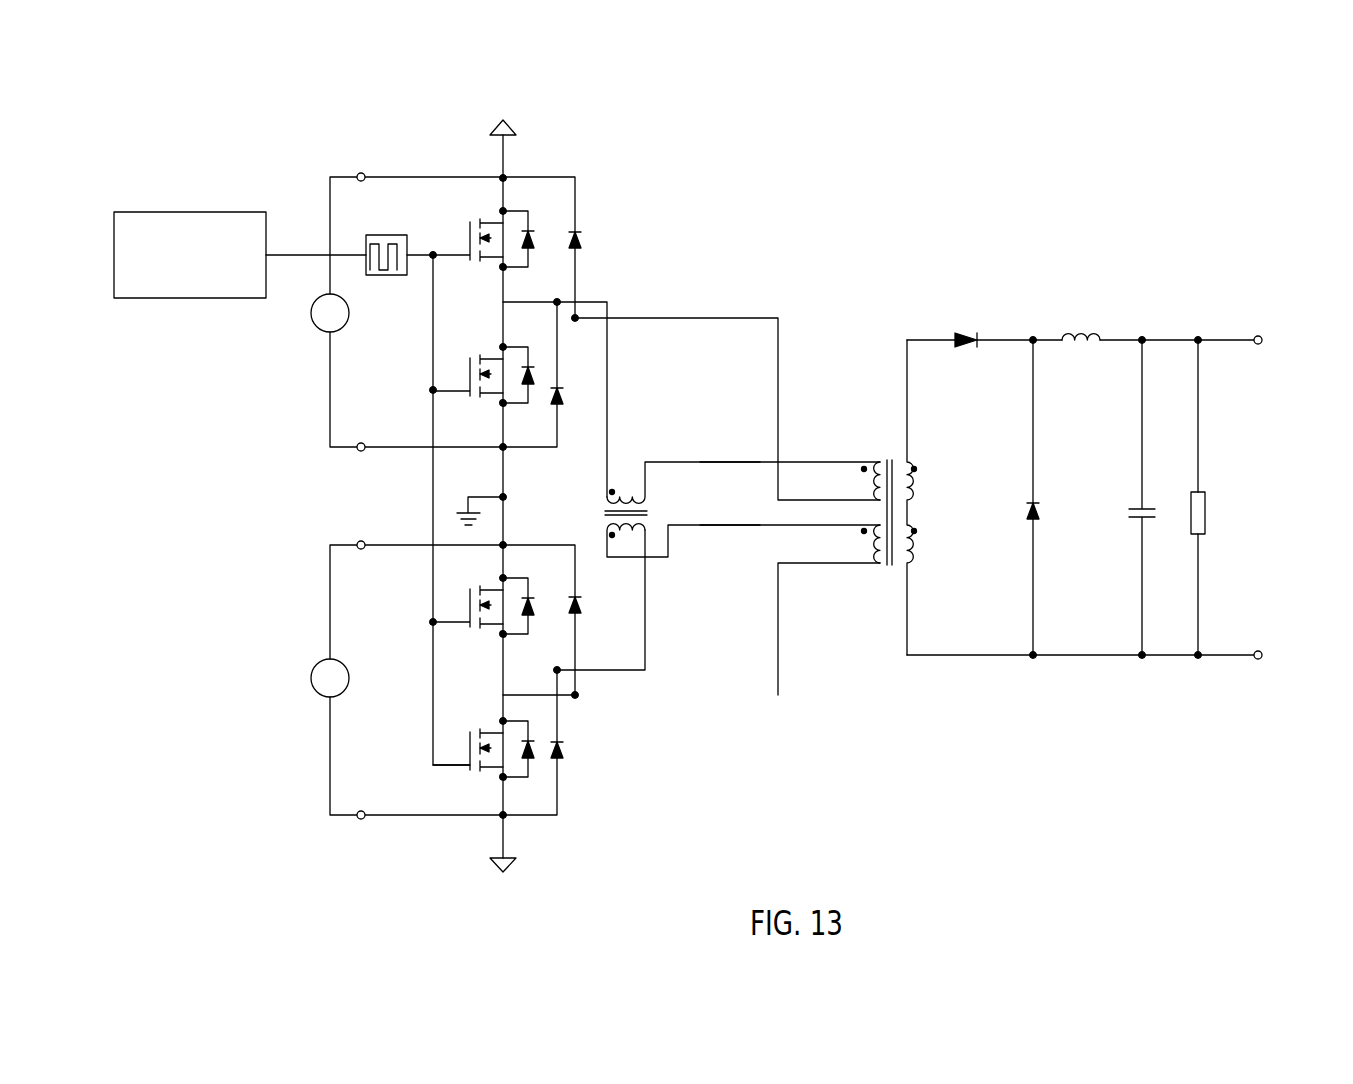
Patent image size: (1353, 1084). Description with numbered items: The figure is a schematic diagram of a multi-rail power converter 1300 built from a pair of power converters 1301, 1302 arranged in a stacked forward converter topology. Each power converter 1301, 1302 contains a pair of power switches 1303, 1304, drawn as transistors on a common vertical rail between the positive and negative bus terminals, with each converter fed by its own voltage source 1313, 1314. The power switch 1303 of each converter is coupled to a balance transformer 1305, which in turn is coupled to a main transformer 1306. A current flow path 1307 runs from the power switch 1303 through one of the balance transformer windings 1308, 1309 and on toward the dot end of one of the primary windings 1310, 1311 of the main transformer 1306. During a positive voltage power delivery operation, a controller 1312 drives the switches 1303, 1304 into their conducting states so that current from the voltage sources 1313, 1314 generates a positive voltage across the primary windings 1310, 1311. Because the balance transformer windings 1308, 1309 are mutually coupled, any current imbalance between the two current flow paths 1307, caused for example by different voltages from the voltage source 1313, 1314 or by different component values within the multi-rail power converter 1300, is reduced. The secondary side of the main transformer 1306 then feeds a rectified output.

The multi-rail power converter 1300 is at (172, 116).
The power converter 1301 is at (264, 330).
The power converter 1302 is at (264, 693).
The power switch 1303 is at (487, 222).
The power switch 1304 is at (487, 357).
The balance transformer 1305 is at (572, 504).
The main transformer 1306 is at (886, 438).
The current flow path 1307 is at (710, 462).
The balance transformer winding 1308 is at (672, 491).
The balance transformer winding 1309 is at (606, 524).
The primary winding 1310 is at (878, 461).
The primary winding 1311 is at (880, 564).
The controller 1312 is at (190, 212).
The voltage source 1313 is at (346, 327).
The voltage source 1314 is at (346, 690).